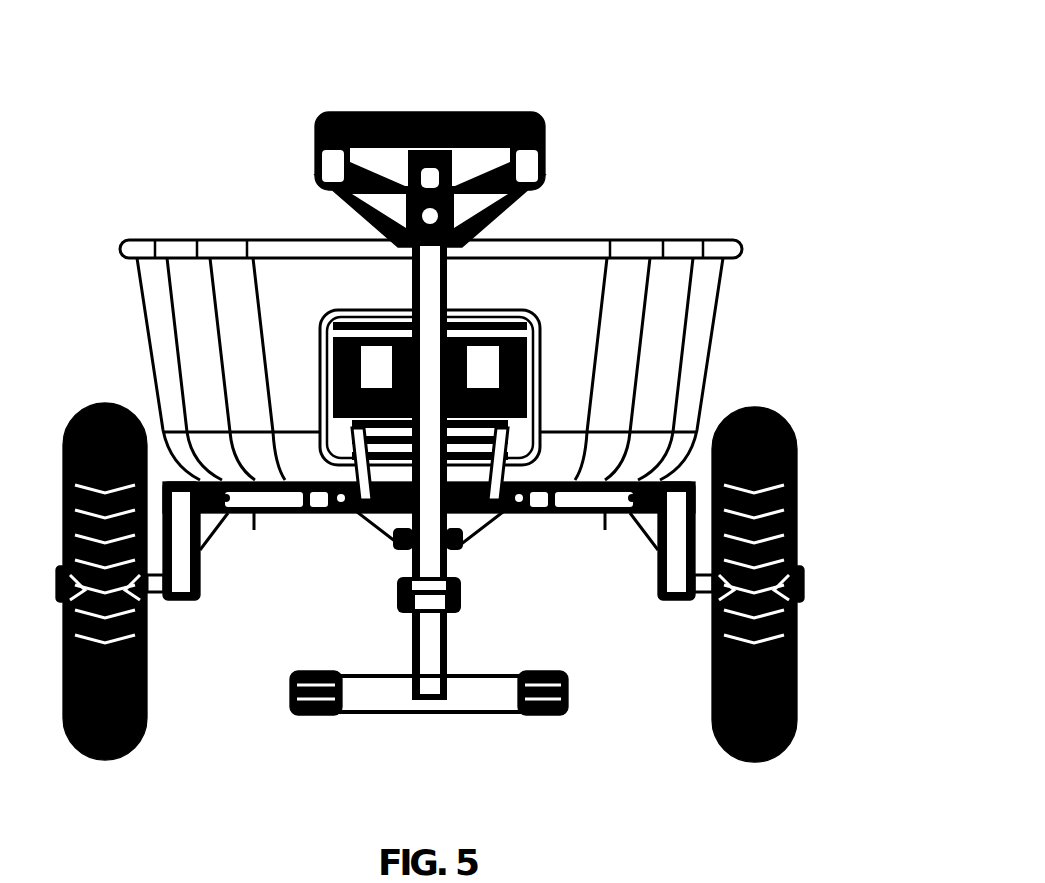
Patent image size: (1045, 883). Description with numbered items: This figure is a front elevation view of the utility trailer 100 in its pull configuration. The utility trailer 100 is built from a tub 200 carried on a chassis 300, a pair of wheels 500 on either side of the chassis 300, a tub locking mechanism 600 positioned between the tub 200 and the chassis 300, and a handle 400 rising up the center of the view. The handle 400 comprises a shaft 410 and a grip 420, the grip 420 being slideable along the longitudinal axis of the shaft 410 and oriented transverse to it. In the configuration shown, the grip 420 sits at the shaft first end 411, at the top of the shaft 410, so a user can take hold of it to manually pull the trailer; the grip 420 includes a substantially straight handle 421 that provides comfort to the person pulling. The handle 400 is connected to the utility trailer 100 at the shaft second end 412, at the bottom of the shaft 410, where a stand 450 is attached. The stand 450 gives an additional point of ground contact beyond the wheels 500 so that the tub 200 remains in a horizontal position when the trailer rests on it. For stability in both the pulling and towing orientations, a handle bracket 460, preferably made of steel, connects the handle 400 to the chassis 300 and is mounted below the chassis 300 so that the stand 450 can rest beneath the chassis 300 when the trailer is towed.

The utility trailer 100 is at (625, 57).
The tub 200 is at (632, 243).
The chassis 300 is at (582, 497).
The handle 400 is at (362, 68).
The shaft 410 is at (322, 434).
The shaft first end 411 is at (430, 292).
The shaft second end 412 is at (450, 658).
The grip 420 is at (443, 136).
The handle 421 is at (446, 161).
The stand 450 is at (372, 703).
The handle bracket 460 is at (400, 556).
The wheels 500 is at (722, 732).
The tub locking mechanism 600 is at (485, 372).